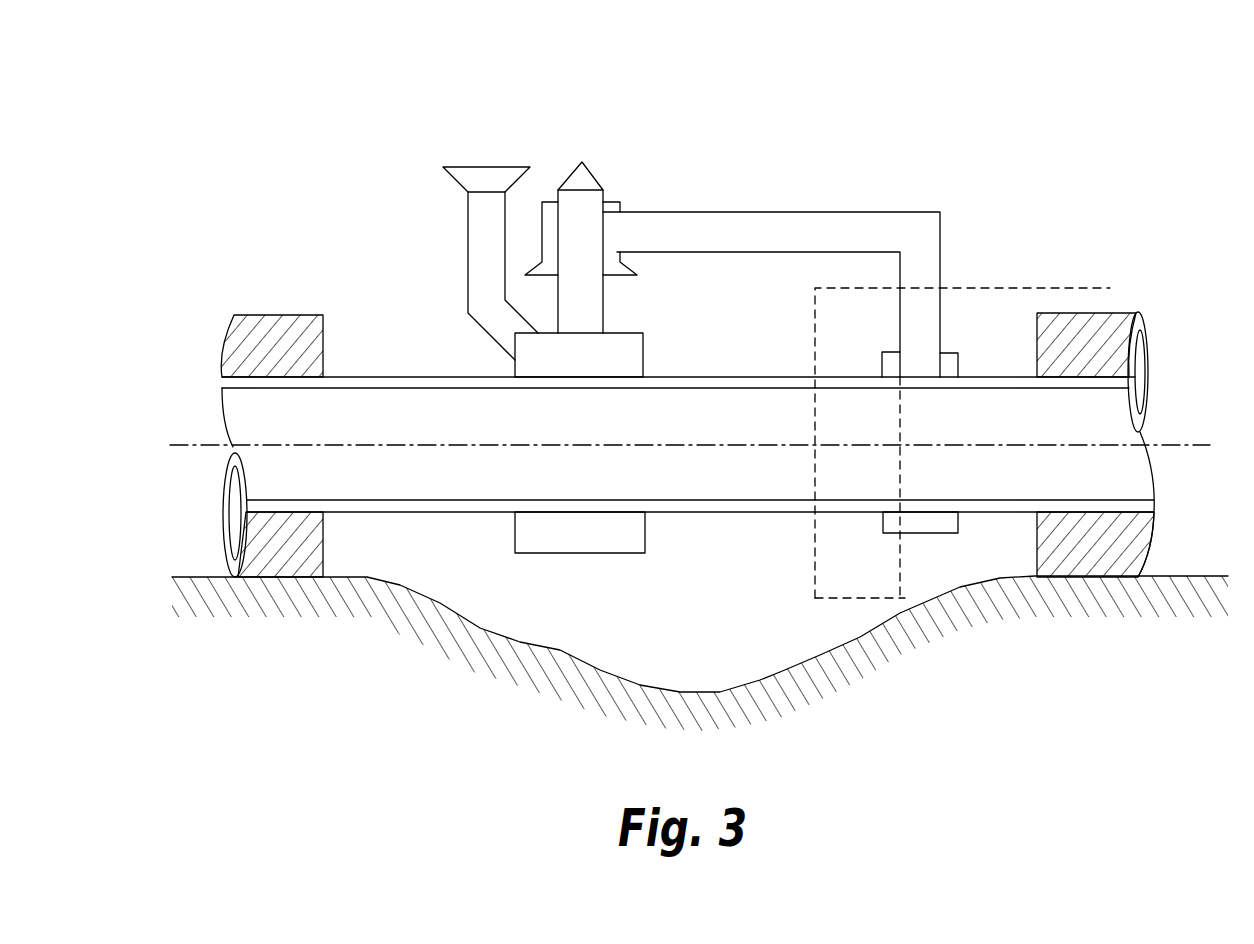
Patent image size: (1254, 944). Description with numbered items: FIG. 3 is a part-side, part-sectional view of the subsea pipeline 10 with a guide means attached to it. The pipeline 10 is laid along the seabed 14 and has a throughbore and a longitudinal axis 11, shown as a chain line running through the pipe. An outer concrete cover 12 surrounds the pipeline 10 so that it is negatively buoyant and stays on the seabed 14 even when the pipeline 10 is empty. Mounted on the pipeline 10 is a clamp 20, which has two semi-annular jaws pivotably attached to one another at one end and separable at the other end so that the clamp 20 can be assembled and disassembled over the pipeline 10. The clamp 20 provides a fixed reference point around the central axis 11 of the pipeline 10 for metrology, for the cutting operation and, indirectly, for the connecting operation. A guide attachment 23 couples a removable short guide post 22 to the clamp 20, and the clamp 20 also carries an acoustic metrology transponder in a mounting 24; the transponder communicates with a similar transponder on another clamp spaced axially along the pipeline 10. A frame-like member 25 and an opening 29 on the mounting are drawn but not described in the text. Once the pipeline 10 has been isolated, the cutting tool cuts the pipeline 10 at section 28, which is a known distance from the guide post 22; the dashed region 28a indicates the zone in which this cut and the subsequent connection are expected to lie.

The subsea pipeline 10 is at (1170, 270).
The longitudinal axis 11 is at (750, 440).
The outer concrete cover 12 is at (1083, 318).
The seabed 14 is at (1178, 598).
The clamp 20 is at (545, 538).
The short guide post 22 is at (585, 240).
The guide attachment 23 is at (620, 316).
The mounting 24 is at (485, 250).
The frame bracket 25 is at (757, 210).
The section 28 is at (910, 561).
The sensor zone 28a is at (808, 548).
The funnel opening 29 is at (480, 177).